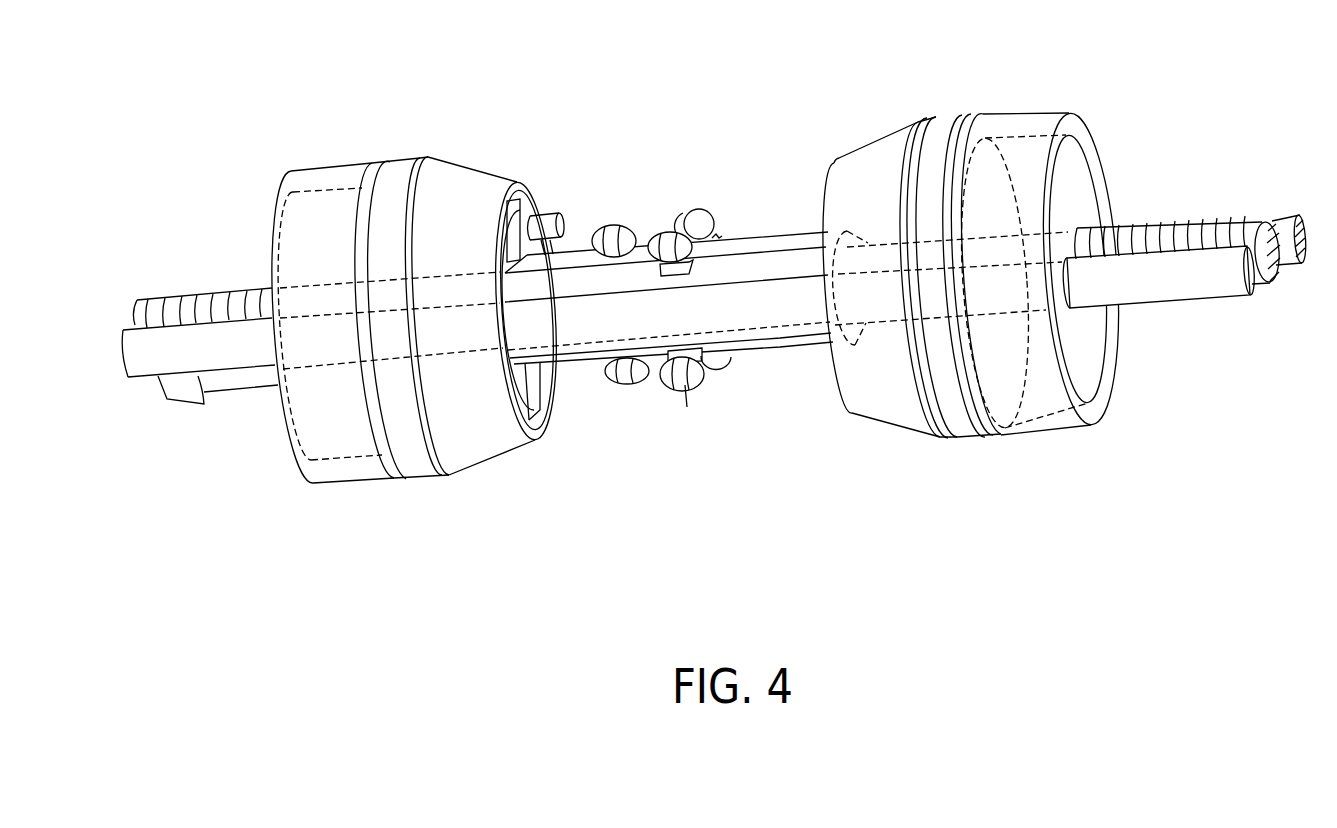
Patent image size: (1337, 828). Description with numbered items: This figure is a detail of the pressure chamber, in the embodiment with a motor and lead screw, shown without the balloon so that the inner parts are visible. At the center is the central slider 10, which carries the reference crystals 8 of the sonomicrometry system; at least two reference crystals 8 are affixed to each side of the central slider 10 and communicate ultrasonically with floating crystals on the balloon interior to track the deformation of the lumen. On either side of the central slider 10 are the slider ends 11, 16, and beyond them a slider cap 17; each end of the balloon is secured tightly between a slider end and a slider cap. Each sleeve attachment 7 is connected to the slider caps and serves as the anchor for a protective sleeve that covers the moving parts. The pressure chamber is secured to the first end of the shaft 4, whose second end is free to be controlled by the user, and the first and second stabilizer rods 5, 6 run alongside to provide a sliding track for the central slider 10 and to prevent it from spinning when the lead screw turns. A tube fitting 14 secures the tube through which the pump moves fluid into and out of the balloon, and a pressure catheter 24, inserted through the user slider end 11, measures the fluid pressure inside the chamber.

The shaft 4 is at (1173, 227).
The first stabilizer rod 5 is at (1289, 214).
The second stabilizer rod 6 is at (1168, 278).
The sleeve attachment 7 is at (324, 168).
The reference crystals 8 is at (675, 226).
The central slider 10 is at (753, 247).
The slider end 11 is at (471, 175).
The tube fitting 14 is at (172, 405).
The slider end 16 is at (867, 154).
The slider cap 17 is at (1040, 133).
The pressure catheter 24 is at (550, 216).